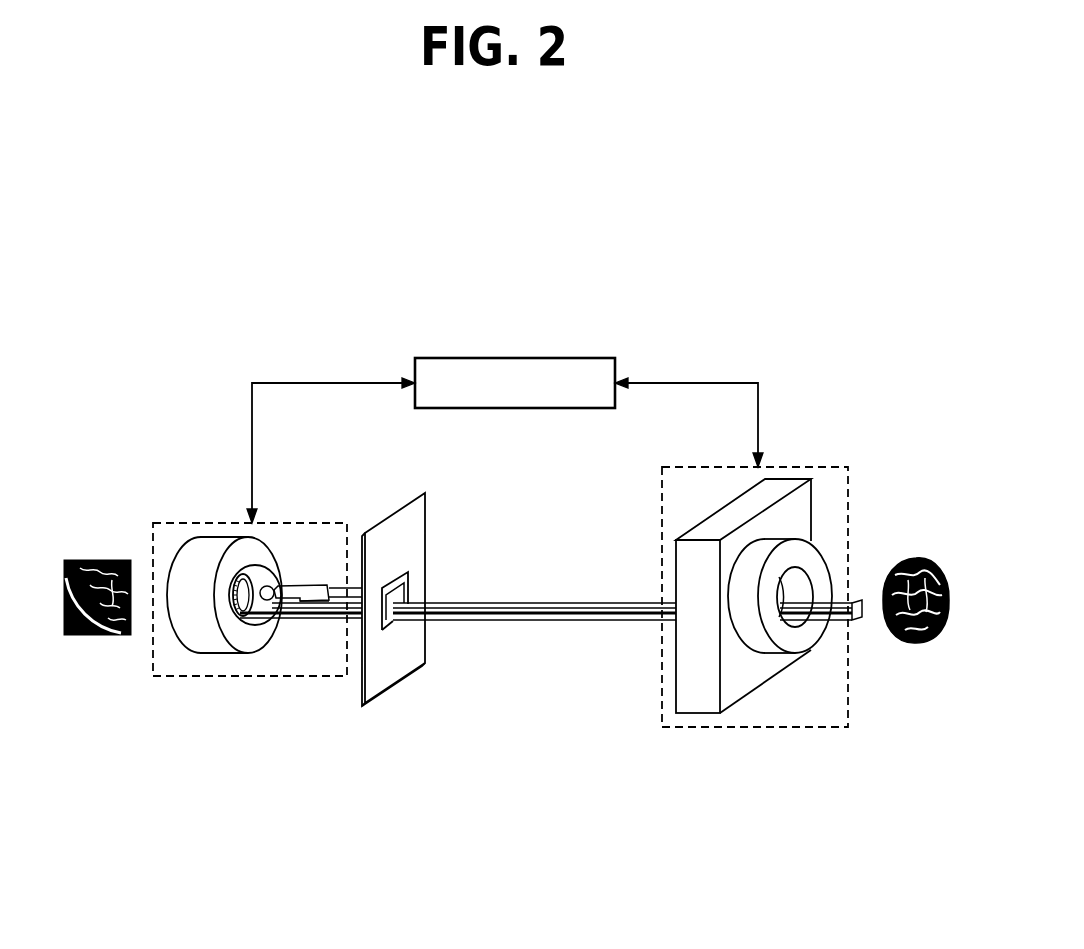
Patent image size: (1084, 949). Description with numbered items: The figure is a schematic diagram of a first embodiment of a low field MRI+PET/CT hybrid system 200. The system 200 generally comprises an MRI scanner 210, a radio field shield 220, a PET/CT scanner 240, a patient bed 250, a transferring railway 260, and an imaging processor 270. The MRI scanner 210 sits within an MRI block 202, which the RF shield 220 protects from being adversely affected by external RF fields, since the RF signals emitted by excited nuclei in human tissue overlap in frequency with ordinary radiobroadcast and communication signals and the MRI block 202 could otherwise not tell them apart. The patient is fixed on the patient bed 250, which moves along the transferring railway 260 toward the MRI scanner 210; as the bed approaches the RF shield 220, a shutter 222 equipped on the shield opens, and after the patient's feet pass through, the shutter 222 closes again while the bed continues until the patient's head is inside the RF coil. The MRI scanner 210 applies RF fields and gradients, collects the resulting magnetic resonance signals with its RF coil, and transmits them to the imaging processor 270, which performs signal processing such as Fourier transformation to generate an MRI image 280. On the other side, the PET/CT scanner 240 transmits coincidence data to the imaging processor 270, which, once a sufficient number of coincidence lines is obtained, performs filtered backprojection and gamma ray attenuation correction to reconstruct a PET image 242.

The system 200 is at (754, 283).
The MRI block 202 is at (194, 522).
The MRI scanner 210 is at (202, 629).
The RF shield 220 is at (393, 668).
The shutter 222 is at (410, 577).
The PET/CT scanner 240 is at (745, 728).
The PET image 242 is at (917, 645).
The patient bed 250 is at (327, 621).
The transferring railway 260 is at (503, 622).
The imaging processor 270 is at (510, 357).
The MRI image 280 is at (92, 637).